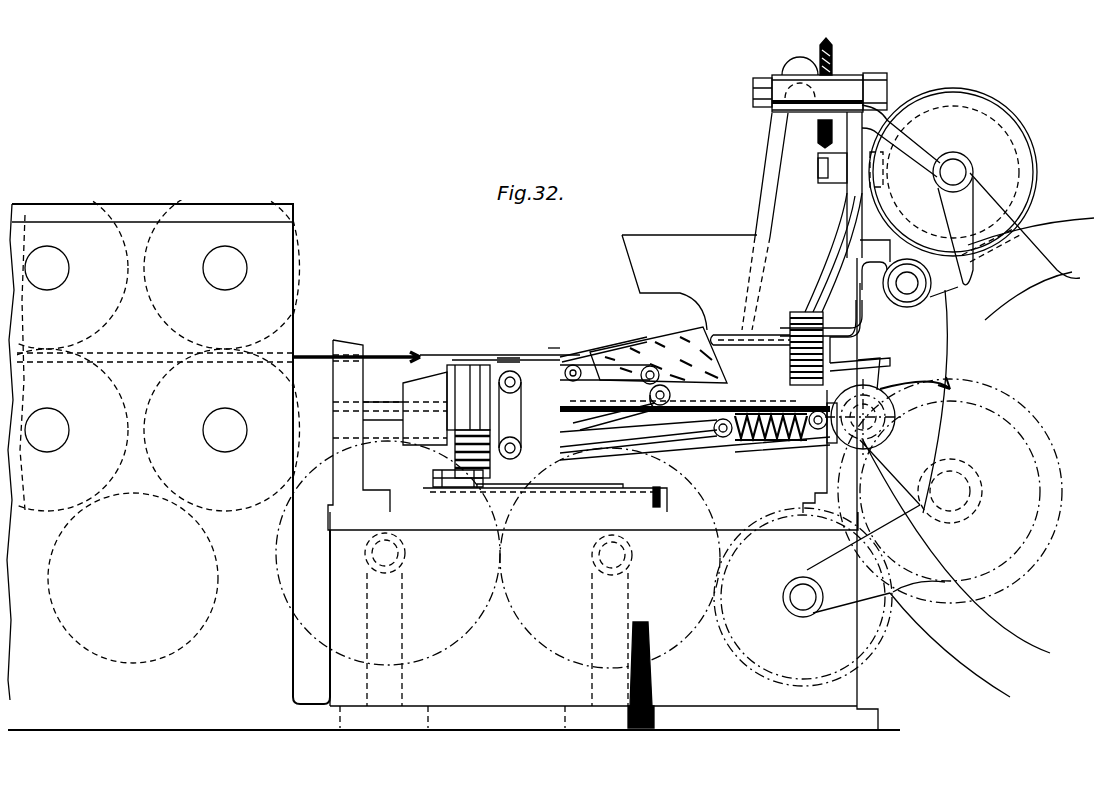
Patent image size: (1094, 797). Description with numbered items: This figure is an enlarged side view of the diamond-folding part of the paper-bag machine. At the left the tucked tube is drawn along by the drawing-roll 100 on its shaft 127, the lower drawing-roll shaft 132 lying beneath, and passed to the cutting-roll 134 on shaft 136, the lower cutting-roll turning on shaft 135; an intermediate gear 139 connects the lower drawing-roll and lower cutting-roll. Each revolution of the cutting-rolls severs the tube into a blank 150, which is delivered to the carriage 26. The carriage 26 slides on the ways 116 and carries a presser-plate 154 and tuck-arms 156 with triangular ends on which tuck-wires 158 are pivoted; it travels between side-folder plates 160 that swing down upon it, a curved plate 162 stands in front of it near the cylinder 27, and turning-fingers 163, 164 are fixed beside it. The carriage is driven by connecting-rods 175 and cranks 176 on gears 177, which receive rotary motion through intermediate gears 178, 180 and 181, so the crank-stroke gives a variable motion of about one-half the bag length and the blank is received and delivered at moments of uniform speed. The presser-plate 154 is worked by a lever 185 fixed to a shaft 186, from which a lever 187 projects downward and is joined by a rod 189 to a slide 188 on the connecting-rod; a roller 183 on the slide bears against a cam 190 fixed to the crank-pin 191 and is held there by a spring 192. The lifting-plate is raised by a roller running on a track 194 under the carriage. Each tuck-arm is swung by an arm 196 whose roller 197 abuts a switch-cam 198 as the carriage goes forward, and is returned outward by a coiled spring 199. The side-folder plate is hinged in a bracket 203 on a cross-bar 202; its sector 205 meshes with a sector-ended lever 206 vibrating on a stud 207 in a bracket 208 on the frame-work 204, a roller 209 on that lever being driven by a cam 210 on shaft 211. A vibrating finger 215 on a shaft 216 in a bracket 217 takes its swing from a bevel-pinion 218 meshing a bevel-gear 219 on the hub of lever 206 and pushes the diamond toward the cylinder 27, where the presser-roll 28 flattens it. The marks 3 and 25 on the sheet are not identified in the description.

The material 3 is at (661, 358).
The frame base 25 is at (155, 699).
The carriage 26 is at (425, 408).
The cylinder 27 is at (1031, 231).
The presser-roll 28 is at (1018, 122).
The drawing-roll 100 is at (453, 458).
The way 116 is at (390, 420).
The shaft 127 is at (47, 268).
The shaft 132 is at (64, 430).
The cutting-roll 134 is at (153, 268).
The shaft 135 is at (225, 430).
The shaft 136 is at (225, 268).
The intermediate gear 139 is at (133, 579).
The blank 150 is at (395, 353).
The presser-plate 154 is at (505, 357).
The tuck-arm 156 is at (612, 352).
The tuck-wire 158 is at (640, 348).
The side-folder plate 160 is at (689, 282).
The curved plate 162 is at (874, 365).
The turning-finger 163 is at (638, 405).
The turning-finger 164 is at (609, 374).
The connecting-rod 175 is at (647, 458).
The crank 176 is at (935, 442).
The gear 177 is at (950, 490).
The intermediate gear 178 is at (817, 595).
The intermediate gear 180 is at (610, 588).
The intermediate gear 181 is at (388, 553).
The roller 183 is at (808, 448).
The lever 185 is at (524, 382).
The shaft 186 is at (552, 348).
The lever 187 is at (521, 416).
The slide 188 is at (728, 434).
The rod 189 is at (680, 442).
The cam 190 is at (818, 430).
The crank-pin 191 is at (880, 408).
The spring 192 is at (790, 440).
The track 194 is at (740, 404).
The arm 196 is at (486, 477).
The roller 197 is at (433, 482).
The switch-cam 198 is at (565, 488).
The coiled spring 199 is at (455, 438).
The cross-bar 202 is at (909, 273).
The bracket 203 is at (890, 330).
The frame-work 204 is at (985, 435).
The sector 205 is at (767, 348).
The sector-ended lever 206 is at (800, 300).
The stud 207 is at (753, 90).
The bracket 208 is at (888, 78).
The roller 209 is at (875, 170).
The cam 210 is at (1010, 110).
The shaft 211 is at (953, 218).
The vibrating finger 215 is at (787, 221).
The shaft 216 is at (790, 80).
The bracket 217 is at (775, 112).
The bevel-pinion 218 is at (790, 63).
The bevel-gear 219 is at (834, 52).